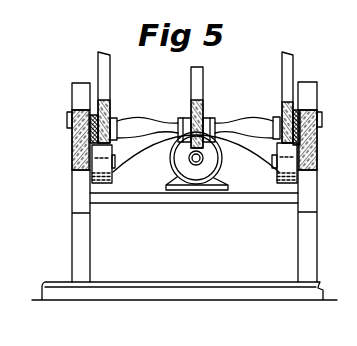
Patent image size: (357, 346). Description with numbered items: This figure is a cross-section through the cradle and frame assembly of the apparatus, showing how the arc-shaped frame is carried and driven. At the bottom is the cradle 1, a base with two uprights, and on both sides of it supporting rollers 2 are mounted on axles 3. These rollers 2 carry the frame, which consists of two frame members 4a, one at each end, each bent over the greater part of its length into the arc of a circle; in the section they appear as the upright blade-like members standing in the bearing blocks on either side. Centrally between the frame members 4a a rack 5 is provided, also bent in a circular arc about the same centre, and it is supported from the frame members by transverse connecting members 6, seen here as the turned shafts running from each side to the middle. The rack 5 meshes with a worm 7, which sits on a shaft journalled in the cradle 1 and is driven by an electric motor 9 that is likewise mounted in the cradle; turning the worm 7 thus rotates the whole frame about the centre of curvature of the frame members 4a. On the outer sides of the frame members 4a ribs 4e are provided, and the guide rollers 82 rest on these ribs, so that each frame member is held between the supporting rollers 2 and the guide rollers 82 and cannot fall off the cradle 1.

The cradle 1 is at (307, 238).
The supporting roller 2 is at (91, 173).
The axle 3 is at (117, 172).
The frame member 4a is at (104, 110).
The rib 4e is at (78, 146).
The rack 5 is at (207, 147).
The transverse connecting member 6 is at (137, 130).
The worm 7 is at (190, 156).
The electric motor 9 is at (210, 168).
The guide roller 82 is at (78, 108).